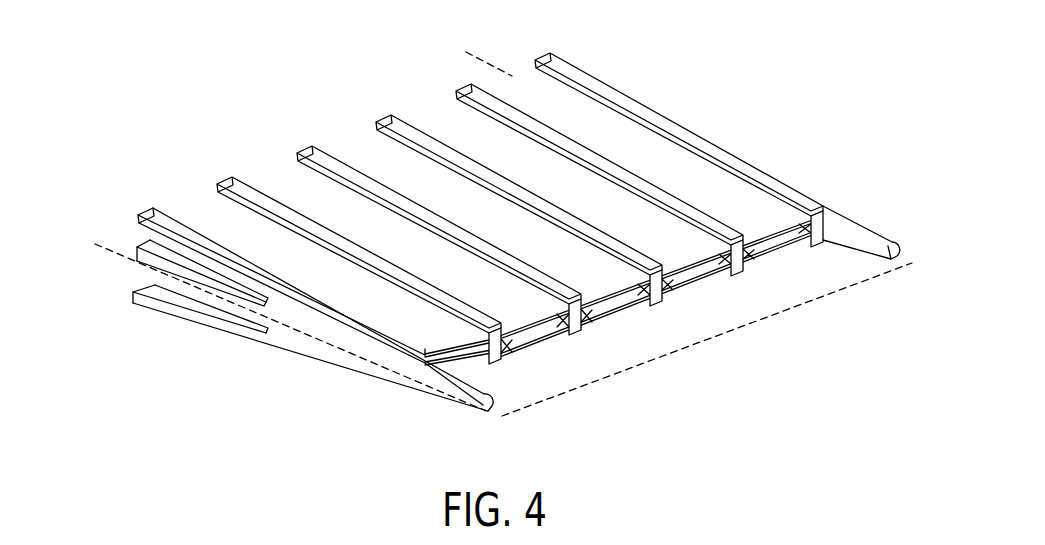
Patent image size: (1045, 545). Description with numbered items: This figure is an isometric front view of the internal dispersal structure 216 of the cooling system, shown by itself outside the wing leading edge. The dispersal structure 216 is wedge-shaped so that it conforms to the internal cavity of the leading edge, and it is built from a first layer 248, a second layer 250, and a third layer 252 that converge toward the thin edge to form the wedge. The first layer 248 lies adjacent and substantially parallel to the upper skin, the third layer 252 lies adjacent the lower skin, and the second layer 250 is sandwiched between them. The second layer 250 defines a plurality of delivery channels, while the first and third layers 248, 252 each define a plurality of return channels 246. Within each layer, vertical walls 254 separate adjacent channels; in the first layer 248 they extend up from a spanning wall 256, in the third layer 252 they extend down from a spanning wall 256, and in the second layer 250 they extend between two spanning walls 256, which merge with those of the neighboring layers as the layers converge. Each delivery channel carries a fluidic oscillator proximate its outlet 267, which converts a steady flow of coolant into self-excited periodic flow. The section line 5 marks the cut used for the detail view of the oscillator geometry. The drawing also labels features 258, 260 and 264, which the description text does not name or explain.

The dispersal structure 216 is at (195, 122).
The section line 5- 5 is at (485, 220).
The return channels 246 is at (617, 120).
The first layer 248 is at (137, 227).
The second layer 250 is at (135, 264).
The third layer 252 is at (135, 300).
The vertical walls 254 is at (563, 136).
The spanning wall 256 is at (697, 277).
The elongate rail 258 is at (712, 152).
The tapered tail end 260 is at (843, 223).
The lower rod 264 is at (618, 301).
The outlet 267 is at (530, 328).